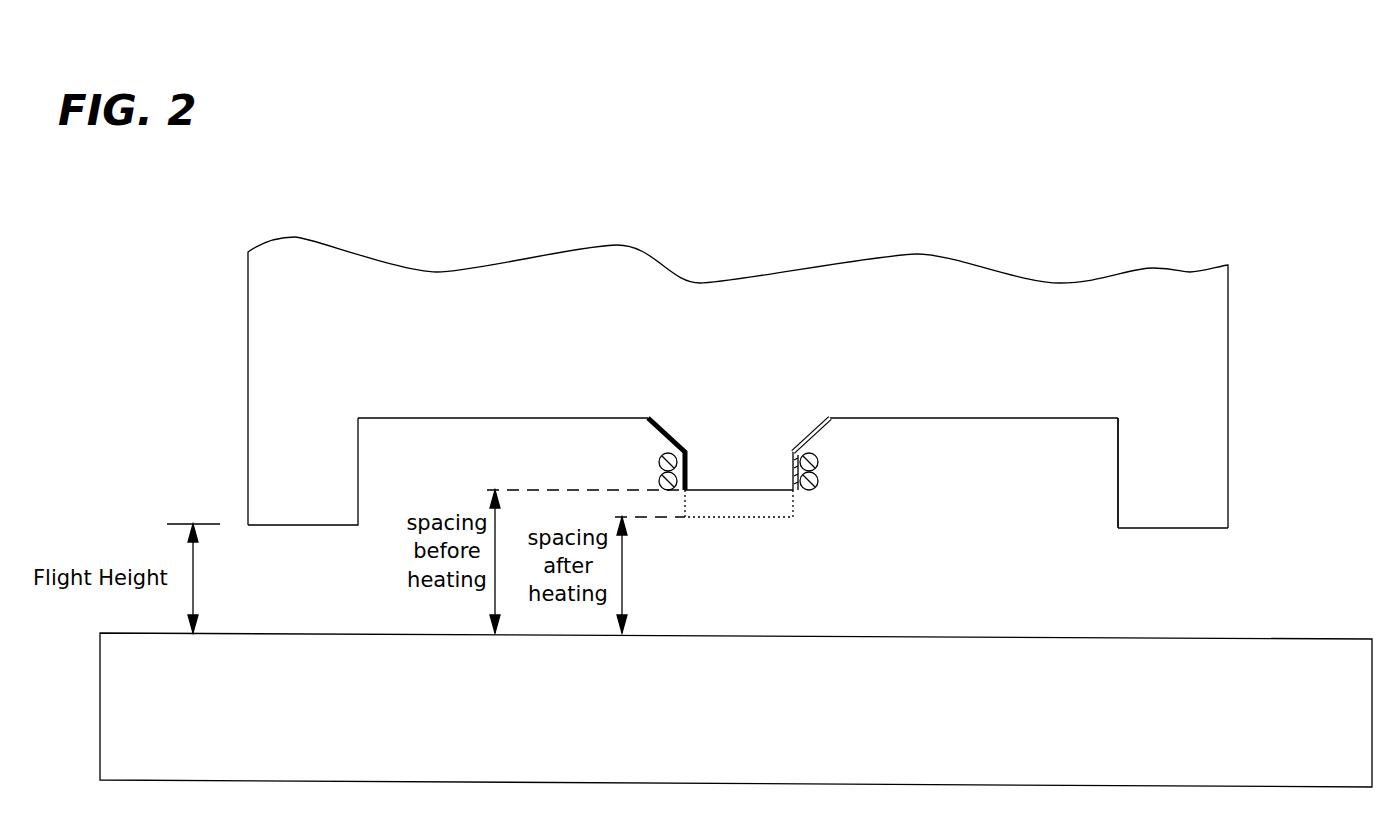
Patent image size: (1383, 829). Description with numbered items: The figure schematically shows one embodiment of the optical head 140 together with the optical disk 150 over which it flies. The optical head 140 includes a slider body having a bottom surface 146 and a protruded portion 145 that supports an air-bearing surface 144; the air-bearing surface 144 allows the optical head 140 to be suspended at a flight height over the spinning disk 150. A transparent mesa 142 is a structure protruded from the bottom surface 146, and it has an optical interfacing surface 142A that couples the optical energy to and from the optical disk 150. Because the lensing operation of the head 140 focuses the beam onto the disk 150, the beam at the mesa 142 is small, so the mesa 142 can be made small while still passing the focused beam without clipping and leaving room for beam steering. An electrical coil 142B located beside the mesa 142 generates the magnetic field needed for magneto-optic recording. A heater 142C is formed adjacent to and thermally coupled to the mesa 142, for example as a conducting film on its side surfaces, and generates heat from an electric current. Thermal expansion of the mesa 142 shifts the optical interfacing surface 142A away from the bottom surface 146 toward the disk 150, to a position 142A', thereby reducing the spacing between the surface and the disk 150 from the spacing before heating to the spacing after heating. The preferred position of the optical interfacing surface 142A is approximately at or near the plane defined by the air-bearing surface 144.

The optical head 140 is at (759, 350).
The mesa 142 is at (758, 462).
The optical interfacing surface 142A is at (866, 527).
The position of the optical interfacing surface when thermally expanded 142A' is at (739, 542).
The electrical coil 142B is at (818, 462).
The heater 142C is at (650, 428).
The air-bearing surface 144 is at (1200, 529).
The protruded portion 145 is at (1185, 476).
The bottom surface 146 is at (445, 419).
The optical disk 150 is at (758, 735).